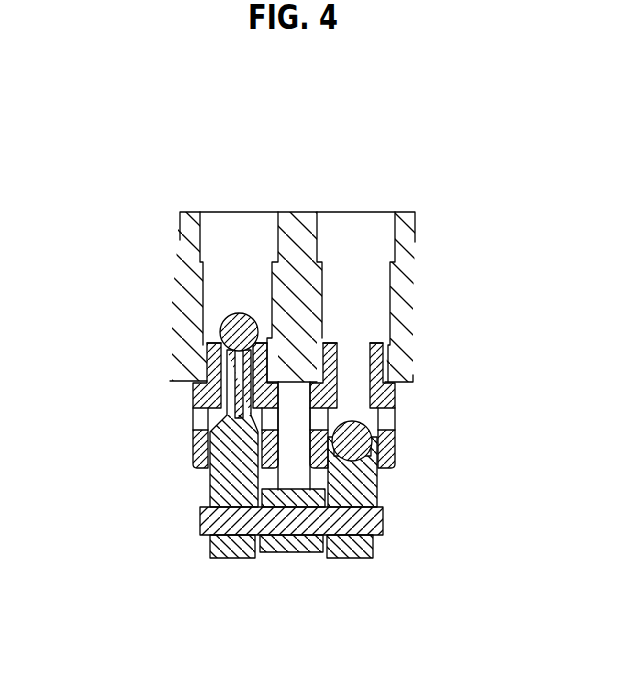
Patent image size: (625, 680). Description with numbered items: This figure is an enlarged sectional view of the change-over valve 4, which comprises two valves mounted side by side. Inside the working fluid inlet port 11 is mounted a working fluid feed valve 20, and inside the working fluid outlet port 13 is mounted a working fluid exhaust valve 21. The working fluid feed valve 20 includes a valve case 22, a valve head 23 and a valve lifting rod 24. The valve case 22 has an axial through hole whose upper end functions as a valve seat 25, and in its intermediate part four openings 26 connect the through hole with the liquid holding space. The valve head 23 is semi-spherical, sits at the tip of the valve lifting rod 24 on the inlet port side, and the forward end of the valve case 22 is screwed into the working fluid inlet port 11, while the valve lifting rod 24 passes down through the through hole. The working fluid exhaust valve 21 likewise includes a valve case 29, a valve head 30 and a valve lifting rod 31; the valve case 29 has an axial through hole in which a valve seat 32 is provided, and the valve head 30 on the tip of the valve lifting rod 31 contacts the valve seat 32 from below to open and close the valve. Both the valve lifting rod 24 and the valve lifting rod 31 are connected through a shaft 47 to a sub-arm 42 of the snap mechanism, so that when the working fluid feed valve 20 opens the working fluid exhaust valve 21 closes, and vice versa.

The change-over valve 4 is at (287, 459).
The working fluid inlet port 11 is at (238, 228).
The working fluid outlet port 13 is at (355, 228).
The working fluid feed valve 20 is at (160, 393).
The working fluid exhaust valve 21 is at (421, 425).
The valve case 22 is at (193, 392).
The valve head 23 is at (222, 318).
The valve lifting rod 24 is at (224, 478).
The valve seat 25 is at (207, 347).
The openings 26 is at (203, 425).
The valve case 29 is at (380, 397).
The valve head 30 is at (376, 423).
The valve lifting rod 31 is at (360, 483).
The valve seat 32 is at (366, 392).
The sub-arm 42 is at (286, 552).
The shaft 47 is at (203, 523).